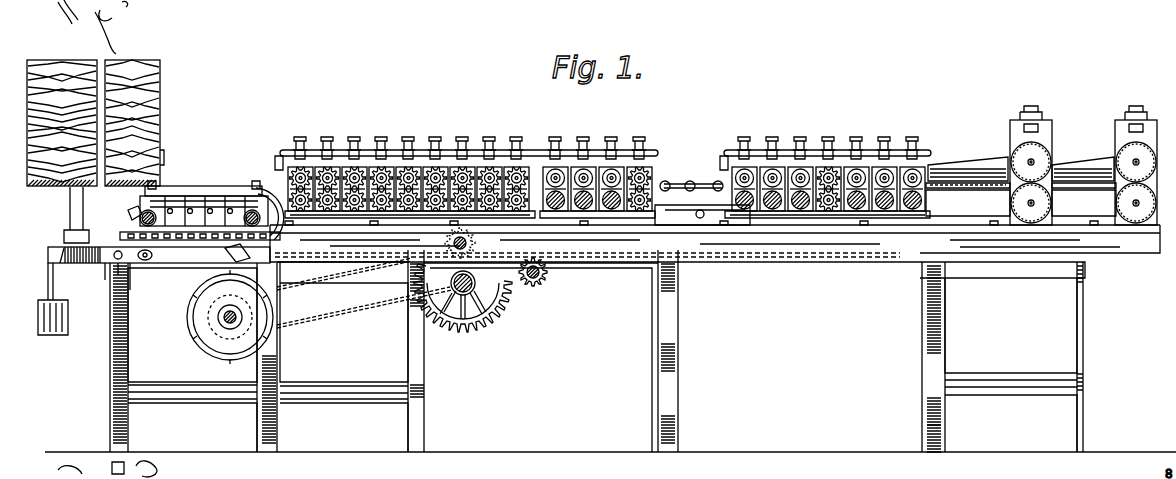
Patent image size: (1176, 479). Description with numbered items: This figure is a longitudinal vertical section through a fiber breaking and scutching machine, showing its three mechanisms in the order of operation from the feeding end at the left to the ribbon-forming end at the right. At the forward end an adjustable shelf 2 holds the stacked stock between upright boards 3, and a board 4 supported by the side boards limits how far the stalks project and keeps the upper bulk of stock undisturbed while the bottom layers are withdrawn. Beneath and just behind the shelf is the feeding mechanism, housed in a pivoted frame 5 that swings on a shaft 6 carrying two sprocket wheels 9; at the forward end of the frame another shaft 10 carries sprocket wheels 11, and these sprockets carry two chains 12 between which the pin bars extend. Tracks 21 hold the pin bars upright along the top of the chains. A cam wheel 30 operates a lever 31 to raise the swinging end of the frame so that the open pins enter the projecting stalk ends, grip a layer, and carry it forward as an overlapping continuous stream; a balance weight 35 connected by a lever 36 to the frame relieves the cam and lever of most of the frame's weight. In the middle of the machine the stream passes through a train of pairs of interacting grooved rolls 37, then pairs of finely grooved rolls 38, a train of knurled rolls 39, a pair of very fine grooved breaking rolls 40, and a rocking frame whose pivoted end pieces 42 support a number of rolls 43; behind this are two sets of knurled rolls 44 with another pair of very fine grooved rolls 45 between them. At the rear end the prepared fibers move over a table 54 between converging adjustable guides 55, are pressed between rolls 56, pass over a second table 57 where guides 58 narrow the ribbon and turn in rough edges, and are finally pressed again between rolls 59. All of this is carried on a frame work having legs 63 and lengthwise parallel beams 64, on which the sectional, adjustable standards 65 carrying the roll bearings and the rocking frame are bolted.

The adjustable shelf 2 is at (66, 190).
The upright boards 3 is at (70, 86).
The board 4 is at (142, 123).
The pivoted frame 5 is at (192, 190).
The shaft 6 is at (200, 225).
The sprocket wheels 9 is at (262, 188).
The shaft 10 is at (128, 214).
The sprocket wheels 11 is at (170, 196).
The chains 12 is at (203, 262).
The tracks 21 is at (222, 190).
The cam wheel 30 is at (196, 326).
The lever 31 is at (168, 266).
The balance weight 35 is at (63, 299).
The lever 36 is at (154, 245).
The grooved rolls 37 is at (298, 150).
The finely grooved rolls 38 is at (456, 150).
The knurled rolls 39 is at (540, 150).
The very fine grooved breaking rolls 40 is at (634, 150).
The pivoted end pieces 42 is at (712, 180).
The rolls 43 is at (678, 200).
The knurled rolls 44 is at (758, 165).
The very fine grooved rolls 45 is at (836, 170).
The table 54 is at (958, 190).
The converging adjustable guides 55 is at (970, 172).
The pressing rolls 56 is at (1038, 160).
The second table 57 is at (1063, 203).
The guides 58 is at (1076, 170).
The pressing rolls 59 is at (1125, 160).
The legs 63 is at (425, 358).
The parallel beams 64 is at (337, 263).
The standards 65 is at (715, 235).